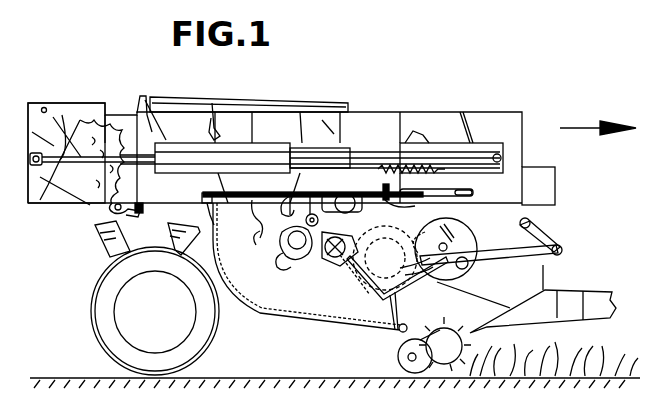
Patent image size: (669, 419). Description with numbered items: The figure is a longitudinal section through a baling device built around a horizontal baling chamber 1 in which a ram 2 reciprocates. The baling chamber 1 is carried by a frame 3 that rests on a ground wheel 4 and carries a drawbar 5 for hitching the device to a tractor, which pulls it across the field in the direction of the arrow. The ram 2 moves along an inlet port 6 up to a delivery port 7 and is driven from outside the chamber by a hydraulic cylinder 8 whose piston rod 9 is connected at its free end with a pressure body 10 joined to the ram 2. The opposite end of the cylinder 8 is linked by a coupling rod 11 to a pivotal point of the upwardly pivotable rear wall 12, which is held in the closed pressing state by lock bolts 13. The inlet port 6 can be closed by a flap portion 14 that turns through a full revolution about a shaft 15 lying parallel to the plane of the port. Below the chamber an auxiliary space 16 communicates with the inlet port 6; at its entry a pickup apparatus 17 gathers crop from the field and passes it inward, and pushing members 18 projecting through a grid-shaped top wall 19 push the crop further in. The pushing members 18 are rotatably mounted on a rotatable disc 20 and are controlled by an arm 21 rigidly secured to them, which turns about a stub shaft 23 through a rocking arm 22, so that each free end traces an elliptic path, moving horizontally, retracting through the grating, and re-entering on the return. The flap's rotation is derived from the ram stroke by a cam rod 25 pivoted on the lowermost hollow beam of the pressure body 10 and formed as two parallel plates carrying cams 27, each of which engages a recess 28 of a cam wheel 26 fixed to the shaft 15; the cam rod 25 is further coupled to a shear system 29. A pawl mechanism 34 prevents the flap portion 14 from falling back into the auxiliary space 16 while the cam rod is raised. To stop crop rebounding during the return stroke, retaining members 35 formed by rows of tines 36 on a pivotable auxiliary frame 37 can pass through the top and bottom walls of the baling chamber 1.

The baling chamber 1 is at (255, 127).
The ram 2 is at (312, 128).
The frame 3 is at (94, 242).
The ground wheel 4 is at (104, 288).
The drawbar 5 is at (585, 302).
The inlet port 6 is at (260, 220).
The delivery port 7 is at (80, 195).
The hydraulic cylinder 8 is at (201, 142).
The piston rod 9 is at (376, 166).
The pressure body 10 is at (452, 145).
The coupling rod 11 is at (68, 190).
The rear wall 12 is at (48, 192).
The lock bolts 13 is at (127, 213).
The flap portion 14 is at (250, 199).
The shaft 15 is at (352, 208).
The auxiliary space 16 is at (282, 311).
The pickup apparatus 17 is at (447, 370).
The pushing members 18 is at (398, 292).
The grid-shaped top wall 19 is at (360, 252).
The rotatable disc 20 is at (467, 237).
The arm 21 is at (496, 262).
The rocking arm 22 is at (544, 236).
The stub shaft 23 is at (526, 220).
The cam rod 25 is at (473, 192).
The cam wheel 26 is at (288, 248).
The cams 27 is at (413, 211).
The recess 28 is at (345, 243).
The shear system 29 is at (378, 168).
The pawl mechanism 34 is at (213, 222).
The retaining members 35 is at (166, 230).
The tines 36 is at (146, 115).
The auxiliary frame 37 is at (197, 100).